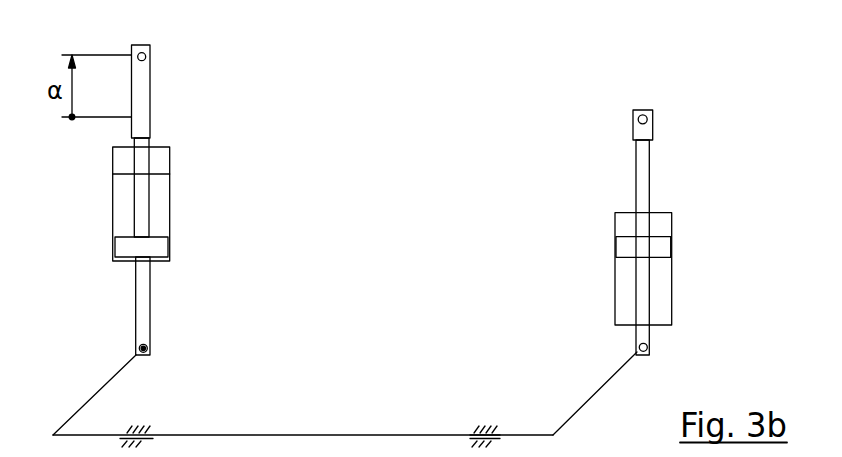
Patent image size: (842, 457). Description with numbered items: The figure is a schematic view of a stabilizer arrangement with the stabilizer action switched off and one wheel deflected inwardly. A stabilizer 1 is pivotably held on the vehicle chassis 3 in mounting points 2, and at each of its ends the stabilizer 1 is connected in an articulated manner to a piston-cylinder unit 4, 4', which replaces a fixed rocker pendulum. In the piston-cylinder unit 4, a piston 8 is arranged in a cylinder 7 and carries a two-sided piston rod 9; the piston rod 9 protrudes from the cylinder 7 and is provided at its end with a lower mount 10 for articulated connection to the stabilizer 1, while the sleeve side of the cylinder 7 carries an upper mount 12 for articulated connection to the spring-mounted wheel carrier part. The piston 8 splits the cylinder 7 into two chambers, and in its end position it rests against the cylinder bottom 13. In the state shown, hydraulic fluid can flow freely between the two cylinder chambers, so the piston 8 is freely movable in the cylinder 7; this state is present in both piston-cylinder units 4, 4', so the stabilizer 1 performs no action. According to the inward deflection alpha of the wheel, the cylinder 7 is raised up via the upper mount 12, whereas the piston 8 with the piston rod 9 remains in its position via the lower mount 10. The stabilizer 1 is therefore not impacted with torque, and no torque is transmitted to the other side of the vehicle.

The stabilizer 1 is at (294, 435).
The mounting points 2 is at (478, 412).
The vehicle chassis 3 is at (498, 424).
The piston-cylinder unit 4 is at (221, 203).
The piston-cylinder unit 4' is at (579, 208).
The cylinder 7 is at (169, 223).
The piston 8 is at (157, 248).
The piston rod 9 is at (143, 304).
The mount 10 is at (150, 355).
The mount 12 is at (143, 57).
The cylinder bottom 13 is at (158, 172).